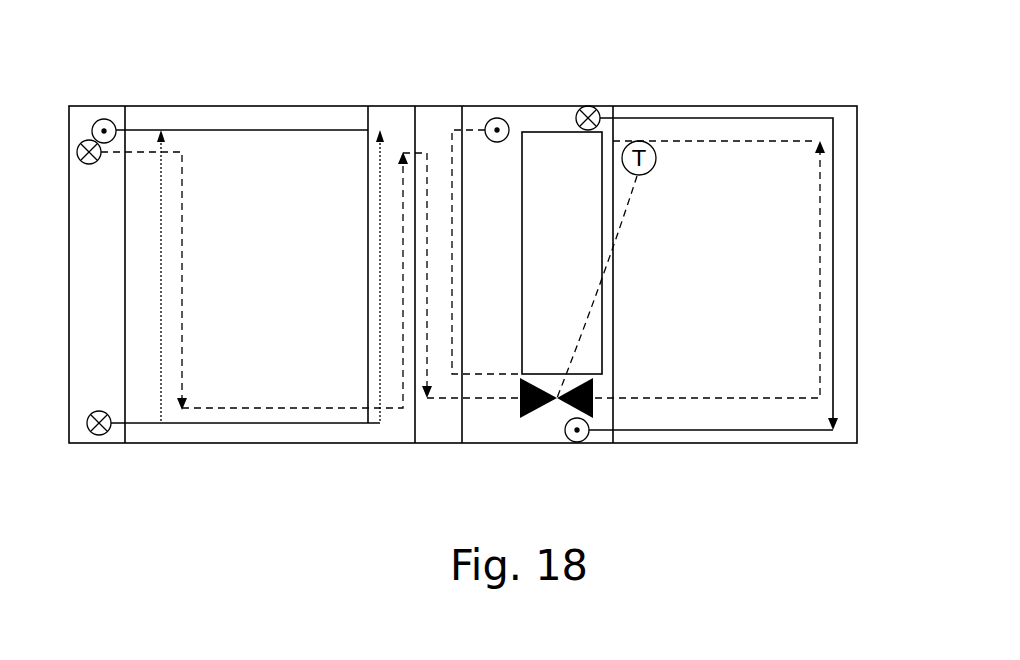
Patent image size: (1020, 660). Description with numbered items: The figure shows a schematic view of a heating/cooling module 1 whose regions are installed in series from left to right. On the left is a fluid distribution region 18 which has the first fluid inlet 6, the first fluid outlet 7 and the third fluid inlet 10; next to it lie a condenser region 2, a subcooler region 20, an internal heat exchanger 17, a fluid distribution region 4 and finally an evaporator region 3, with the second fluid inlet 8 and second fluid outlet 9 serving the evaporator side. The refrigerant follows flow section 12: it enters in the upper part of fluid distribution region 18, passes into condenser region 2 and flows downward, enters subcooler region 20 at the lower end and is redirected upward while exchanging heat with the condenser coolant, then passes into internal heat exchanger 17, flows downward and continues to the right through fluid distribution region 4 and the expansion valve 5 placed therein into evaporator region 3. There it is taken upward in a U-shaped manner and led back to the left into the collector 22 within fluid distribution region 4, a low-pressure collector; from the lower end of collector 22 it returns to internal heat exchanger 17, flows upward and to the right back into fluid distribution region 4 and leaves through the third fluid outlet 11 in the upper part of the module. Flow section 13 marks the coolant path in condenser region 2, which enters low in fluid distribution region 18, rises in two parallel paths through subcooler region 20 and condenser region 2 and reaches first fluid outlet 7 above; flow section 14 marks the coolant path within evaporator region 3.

The heating/cooling module 1 is at (412, 93).
The condenser region 2 is at (232, 104).
The evaporator region 3 is at (787, 104).
The fluid distribution region 4 is at (557, 104).
The expansion valve 5 is at (556, 406).
The first fluid inlet 6 is at (99, 436).
The first fluid outlet 7 is at (100, 119).
The second fluid inlet 8 is at (591, 106).
The second fluid outlet 9 is at (577, 443).
The third fluid inlet 10 is at (78, 150).
The third fluid outlet 11 is at (495, 117).
The flow section 12 is at (182, 193).
The flow section 13 is at (297, 128).
The flow section 14 is at (836, 256).
The internal heat exchanger 17 is at (443, 436).
The fluid distribution region 18 is at (82, 104).
The subcooler region 20 is at (385, 445).
The collector 22 is at (537, 160).